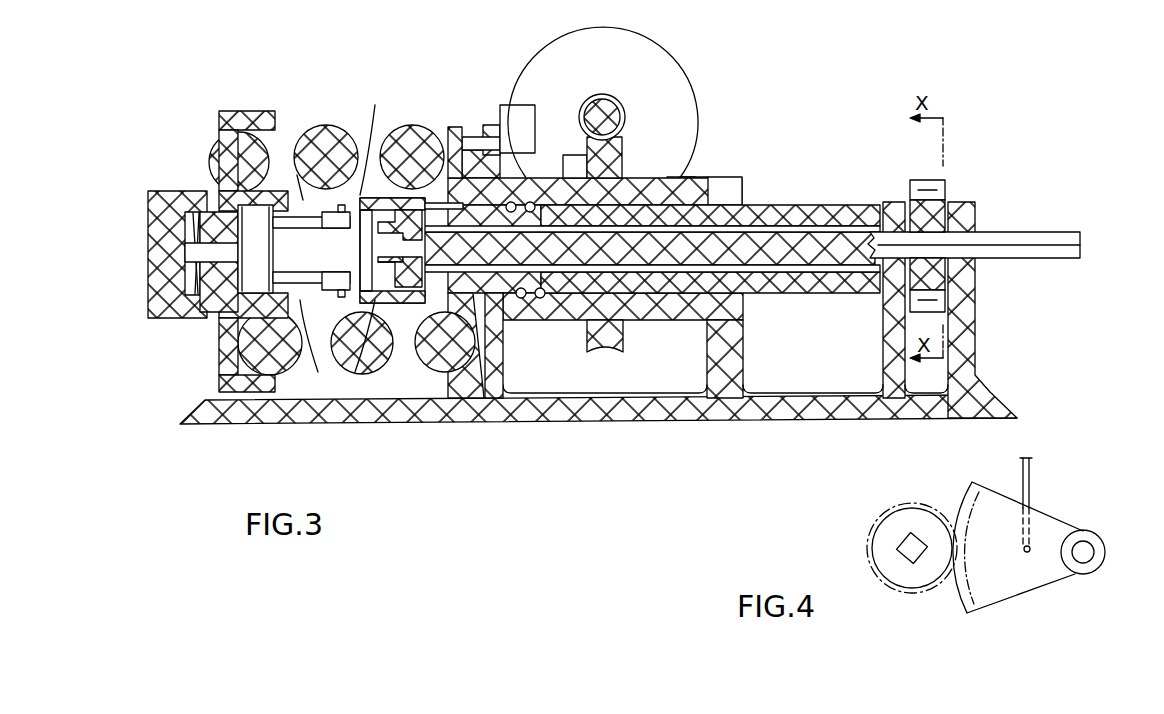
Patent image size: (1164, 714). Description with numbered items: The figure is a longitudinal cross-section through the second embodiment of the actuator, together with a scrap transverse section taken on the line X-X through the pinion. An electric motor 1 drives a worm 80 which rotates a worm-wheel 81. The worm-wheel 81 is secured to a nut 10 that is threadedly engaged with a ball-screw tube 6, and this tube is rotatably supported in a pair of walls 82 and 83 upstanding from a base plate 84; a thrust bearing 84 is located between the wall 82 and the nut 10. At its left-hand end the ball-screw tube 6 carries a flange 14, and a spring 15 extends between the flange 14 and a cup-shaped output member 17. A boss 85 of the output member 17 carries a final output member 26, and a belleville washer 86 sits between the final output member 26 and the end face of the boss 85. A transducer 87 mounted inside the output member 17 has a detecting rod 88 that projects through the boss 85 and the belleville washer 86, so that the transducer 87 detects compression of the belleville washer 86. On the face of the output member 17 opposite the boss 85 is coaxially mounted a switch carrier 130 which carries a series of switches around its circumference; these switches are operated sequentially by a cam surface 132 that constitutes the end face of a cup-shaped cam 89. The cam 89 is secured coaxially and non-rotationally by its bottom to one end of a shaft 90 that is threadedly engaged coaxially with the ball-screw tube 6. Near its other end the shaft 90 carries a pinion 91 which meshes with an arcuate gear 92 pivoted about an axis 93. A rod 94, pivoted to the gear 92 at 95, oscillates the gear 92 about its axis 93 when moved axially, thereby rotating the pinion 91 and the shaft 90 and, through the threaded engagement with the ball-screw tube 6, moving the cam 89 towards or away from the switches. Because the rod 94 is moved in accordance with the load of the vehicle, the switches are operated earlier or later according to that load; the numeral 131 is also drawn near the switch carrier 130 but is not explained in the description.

In FIG. 3, the electric motor 1 is at (603, 67).
In FIG. 3, the ball-screw tube 6 is at (583, 280).
In FIG. 3, the nut 10 is at (635, 309).
In FIG. 3, the flange 14 is at (455, 127).
In FIG. 3, the spring 15 is at (317, 142).
In FIG. 3, the cup-shaped output member 17 is at (210, 343).
In FIG. 3, the final output member 26 is at (165, 205).
In FIG. 3, the worm 80 is at (605, 118).
In FIG. 3, the worm-wheel 81 is at (602, 157).
In FIG. 3, the wall 82 is at (722, 367).
In FIG. 3, the wall 83 is at (490, 360).
In FIG. 3, the base plate / thrust bearing 84 is at (690, 177).
In FIG. 3, the boss 85 is at (217, 280).
In FIG. 3, the belleville washer 86 is at (183, 223).
In FIG. 3, the transducer 87 is at (252, 248).
In FIG. 3, the detecting rod 88 is at (210, 252).
In FIG. 3, the cup-shaped cam 89 is at (394, 194).
In FIG. 3, the shaft 90 is at (795, 232).
In FIG. 3, the pinion 91 is at (940, 198).
In FIG. 4, the pinion 91 is at (893, 562).
In FIG. 4, the arcuate gear 92 is at (985, 597).
In FIG. 4, the axis 93 is at (1085, 548).
In FIG. 4, the rod 94 is at (1033, 490).
In FIG. 4, the pivot 95 is at (1030, 553).
In FIG. 3, the switch carrier 130 is at (305, 297).
In FIG. 3, the pin 131 is at (333, 297).
In FIG. 3, the cam surface 132 is at (358, 247).